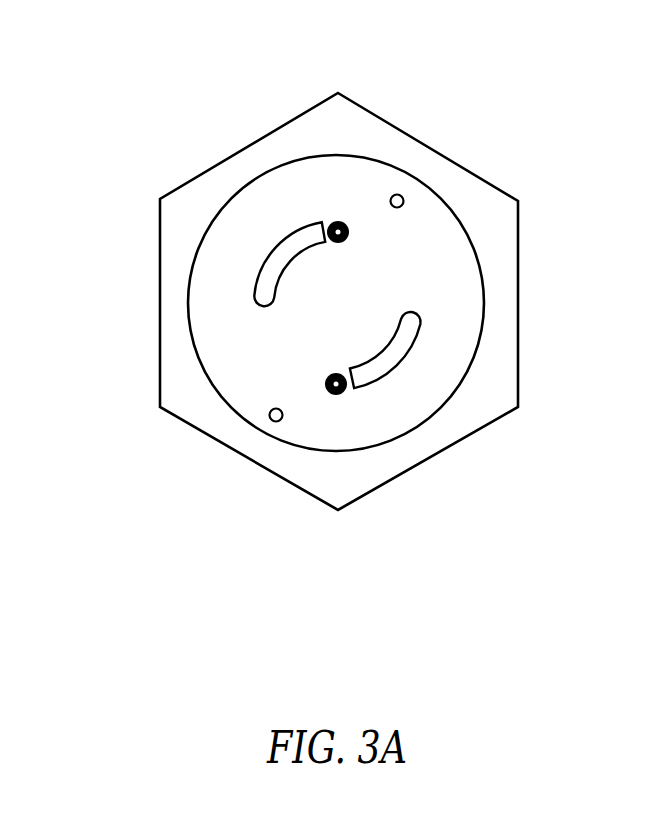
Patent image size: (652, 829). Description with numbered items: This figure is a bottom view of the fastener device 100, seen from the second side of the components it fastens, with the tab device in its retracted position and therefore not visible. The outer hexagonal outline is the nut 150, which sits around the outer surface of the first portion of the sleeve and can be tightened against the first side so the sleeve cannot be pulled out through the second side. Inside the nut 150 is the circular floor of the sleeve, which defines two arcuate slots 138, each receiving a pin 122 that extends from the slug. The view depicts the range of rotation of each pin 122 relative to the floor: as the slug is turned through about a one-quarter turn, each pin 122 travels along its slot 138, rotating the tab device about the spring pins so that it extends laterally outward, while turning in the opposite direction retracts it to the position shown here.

The fastener device 100 is at (326, 323).
The nut 150 is at (188, 198).
The pin 122 is at (340, 228).
The slot 138 is at (283, 243).